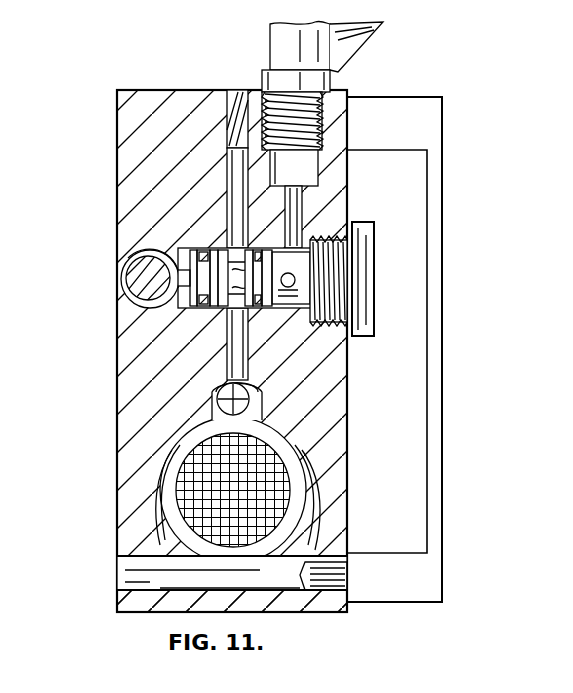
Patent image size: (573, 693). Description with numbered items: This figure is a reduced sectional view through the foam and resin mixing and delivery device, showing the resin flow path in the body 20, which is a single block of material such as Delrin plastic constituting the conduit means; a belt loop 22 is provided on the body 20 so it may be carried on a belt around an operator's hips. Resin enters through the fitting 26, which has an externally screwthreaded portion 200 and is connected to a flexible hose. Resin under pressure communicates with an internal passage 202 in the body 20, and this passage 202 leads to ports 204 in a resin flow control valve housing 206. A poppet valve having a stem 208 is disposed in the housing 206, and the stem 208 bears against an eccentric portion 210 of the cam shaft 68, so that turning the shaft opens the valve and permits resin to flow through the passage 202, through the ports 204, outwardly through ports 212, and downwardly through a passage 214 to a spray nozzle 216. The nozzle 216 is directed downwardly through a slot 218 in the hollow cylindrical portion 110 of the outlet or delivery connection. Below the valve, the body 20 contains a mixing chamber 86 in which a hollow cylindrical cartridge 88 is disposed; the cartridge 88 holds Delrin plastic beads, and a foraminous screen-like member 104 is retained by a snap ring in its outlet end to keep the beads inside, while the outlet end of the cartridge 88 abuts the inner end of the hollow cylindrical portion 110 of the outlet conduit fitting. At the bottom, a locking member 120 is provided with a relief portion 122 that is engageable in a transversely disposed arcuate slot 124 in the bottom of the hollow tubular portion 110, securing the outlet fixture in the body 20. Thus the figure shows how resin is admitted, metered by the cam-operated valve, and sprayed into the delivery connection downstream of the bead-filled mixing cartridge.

The body 20 is at (100, 427).
The belt loop 22 is at (428, 411).
The fitting 26 is at (272, 50).
The cam shaft 68 is at (136, 291).
The mixing chamber 86 is at (208, 496).
The hollow cylindrical cartridge 88 is at (300, 500).
The foraminous member 104 is at (175, 515).
The hollow cylindrical portion 110 is at (175, 470).
The locking member 120 is at (320, 558).
The relief portion 122 is at (282, 612).
The arcuate slot 124 is at (128, 559).
The externally screwthreaded portion 200 is at (262, 82).
The internal passage 202 is at (303, 176).
The ports 204 is at (325, 325).
The resin flow control valve housing 206 is at (345, 283).
The stem 208 is at (160, 244).
The eccentric portion 210 is at (148, 252).
The ports 212 is at (195, 306).
The passage 214 is at (225, 340).
The spray nozzle 216 is at (262, 396).
The slot 218 is at (250, 410).